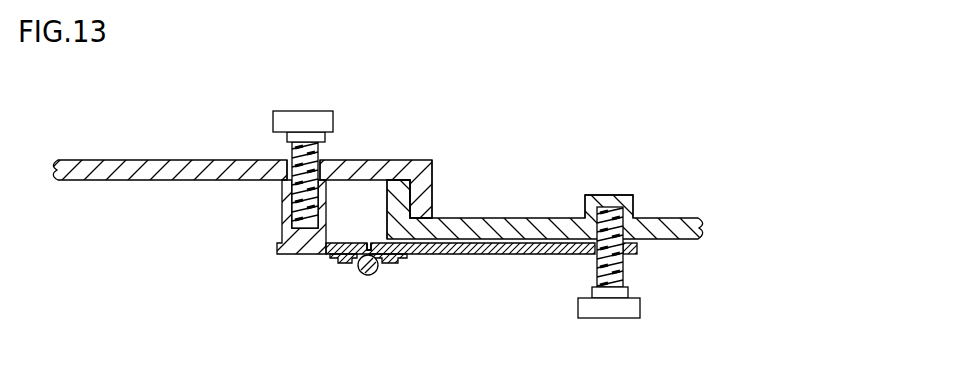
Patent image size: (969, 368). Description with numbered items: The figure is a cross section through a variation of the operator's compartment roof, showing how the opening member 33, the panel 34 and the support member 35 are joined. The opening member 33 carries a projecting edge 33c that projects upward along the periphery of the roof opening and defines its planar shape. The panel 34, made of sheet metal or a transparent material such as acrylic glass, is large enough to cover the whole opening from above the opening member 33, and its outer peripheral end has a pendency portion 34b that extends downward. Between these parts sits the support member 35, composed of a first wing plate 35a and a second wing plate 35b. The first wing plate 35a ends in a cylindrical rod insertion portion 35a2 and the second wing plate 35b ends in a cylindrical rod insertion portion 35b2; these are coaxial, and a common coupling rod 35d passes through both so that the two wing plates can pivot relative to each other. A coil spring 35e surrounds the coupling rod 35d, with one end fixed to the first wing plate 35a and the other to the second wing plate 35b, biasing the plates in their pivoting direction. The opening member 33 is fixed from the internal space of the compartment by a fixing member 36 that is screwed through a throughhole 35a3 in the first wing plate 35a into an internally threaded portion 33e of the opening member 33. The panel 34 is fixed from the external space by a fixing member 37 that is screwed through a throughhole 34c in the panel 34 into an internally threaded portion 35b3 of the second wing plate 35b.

The opening member 33 is at (508, 228).
The projecting edge 33c is at (397, 203).
The internally threaded portion 33e is at (630, 221).
The panel 34 is at (183, 170).
The pendency portion 34b is at (422, 203).
The throughhole 34c is at (285, 173).
The support member 35 is at (448, 271).
The first wing plate 35a is at (500, 247).
The rod insertion portion 35a2 is at (362, 274).
The throughhole 35a3 is at (638, 249).
The second wing plate 35b is at (297, 238).
The rod insertion portion 35b2 is at (369, 246).
The internally threaded portion 35b3 is at (290, 210).
The coupling rod 35d is at (375, 261).
The spring 35e is at (402, 256).
The fixing member 36 is at (607, 307).
The fixing member 37 is at (301, 121).